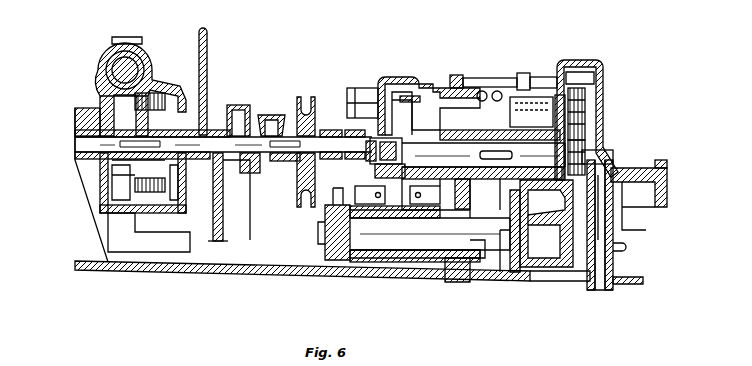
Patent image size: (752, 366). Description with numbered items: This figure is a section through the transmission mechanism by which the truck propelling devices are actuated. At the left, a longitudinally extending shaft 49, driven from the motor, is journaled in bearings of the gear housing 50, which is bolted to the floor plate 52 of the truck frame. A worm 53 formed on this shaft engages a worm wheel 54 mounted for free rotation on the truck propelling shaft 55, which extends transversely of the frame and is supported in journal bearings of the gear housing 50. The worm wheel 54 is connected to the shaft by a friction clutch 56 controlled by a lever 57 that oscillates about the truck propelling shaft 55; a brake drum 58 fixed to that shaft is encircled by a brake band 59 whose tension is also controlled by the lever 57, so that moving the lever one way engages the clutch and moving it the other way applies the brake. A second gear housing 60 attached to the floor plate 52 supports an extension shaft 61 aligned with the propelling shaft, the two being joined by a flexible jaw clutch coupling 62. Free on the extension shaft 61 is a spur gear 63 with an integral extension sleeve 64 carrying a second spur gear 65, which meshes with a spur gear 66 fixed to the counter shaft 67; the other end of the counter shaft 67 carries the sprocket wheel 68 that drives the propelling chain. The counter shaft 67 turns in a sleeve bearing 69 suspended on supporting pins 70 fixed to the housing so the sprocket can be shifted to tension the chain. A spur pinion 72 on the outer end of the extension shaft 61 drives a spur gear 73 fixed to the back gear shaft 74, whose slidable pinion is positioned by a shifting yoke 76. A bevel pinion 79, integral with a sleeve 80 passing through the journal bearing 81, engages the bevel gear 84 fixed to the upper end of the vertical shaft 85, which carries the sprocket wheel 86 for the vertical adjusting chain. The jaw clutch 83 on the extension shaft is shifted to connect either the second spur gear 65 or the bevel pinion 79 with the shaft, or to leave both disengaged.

The longitudinally extending shaft 49 is at (125, 65).
The gear housing 50 is at (150, 62).
The floor plate 52 is at (318, 274).
The worm 53 is at (138, 55).
The worm wheel 54 is at (98, 108).
The truck propelling shaft 55 is at (80, 143).
The friction clutch 56 is at (135, 186).
The lever 57 is at (208, 62).
The brake drum 58 is at (262, 113).
The brake band 59 is at (241, 104).
The second gear housing 60 is at (404, 78).
The extension shaft 61 is at (442, 152).
The jaw clutch coupling 62 is at (372, 172).
The spur gear 63 is at (420, 84).
The extension sleeve 64 is at (432, 132).
The second spur gear 65 is at (484, 102).
The spur gear 66 is at (468, 282).
The counter shaft 67 is at (432, 252).
The sprocket wheel 68 is at (344, 262).
The sleeve bearing 69 is at (384, 264).
The supporting pins 70 is at (356, 195).
The spur pinion 72 is at (588, 150).
The spur gear 73 is at (586, 104).
The back gear shaft 74 is at (359, 96).
The shifting yoke 76 is at (452, 74).
The bevel pinion 79 is at (586, 132).
The sleeve 80 is at (522, 185).
The journal bearing 81 is at (536, 128).
The jaw clutch 83 is at (515, 272).
The bevel gear 84 is at (630, 178).
The vertical shaft 85 is at (616, 217).
The sprocket wheel 86 is at (626, 247).